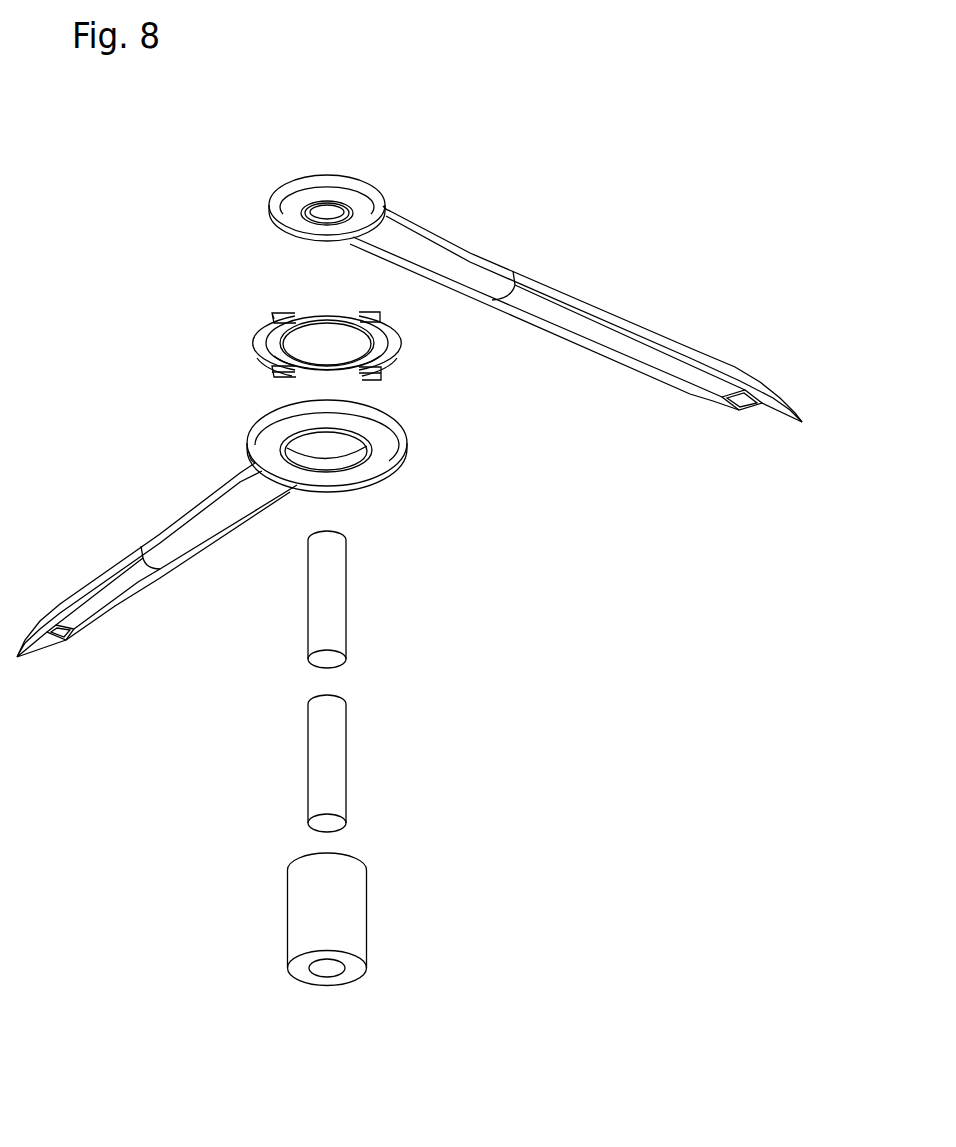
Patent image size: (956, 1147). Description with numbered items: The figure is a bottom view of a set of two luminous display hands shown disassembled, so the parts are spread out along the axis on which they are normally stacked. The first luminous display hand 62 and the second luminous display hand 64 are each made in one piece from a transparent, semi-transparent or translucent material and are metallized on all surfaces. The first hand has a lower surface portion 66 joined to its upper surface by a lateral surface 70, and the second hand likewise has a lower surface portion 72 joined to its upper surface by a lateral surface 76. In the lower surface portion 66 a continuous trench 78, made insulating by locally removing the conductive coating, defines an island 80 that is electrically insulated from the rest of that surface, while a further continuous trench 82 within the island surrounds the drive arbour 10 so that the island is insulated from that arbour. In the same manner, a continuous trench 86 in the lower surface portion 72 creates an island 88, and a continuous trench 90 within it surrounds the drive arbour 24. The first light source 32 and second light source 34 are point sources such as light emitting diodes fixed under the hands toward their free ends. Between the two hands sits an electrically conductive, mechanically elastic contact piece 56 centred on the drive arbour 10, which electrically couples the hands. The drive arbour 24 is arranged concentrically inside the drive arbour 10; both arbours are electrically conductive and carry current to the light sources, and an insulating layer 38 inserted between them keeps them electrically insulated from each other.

The drive arbour 10 is at (345, 893).
The drive arbour 24 is at (327, 600).
The insulating layer 38 is at (330, 758).
The contact piece 56 is at (389, 362).
The first luminous display hand 62 is at (224, 567).
The second luminous display hand 64 is at (512, 334).
The lower surface portion 66 is at (30, 649).
The lateral surface 70 is at (100, 580).
The lower surface portion 72 is at (778, 423).
The lateral surface 76 is at (630, 322).
The continuous trench 78 is at (115, 605).
The island 80 is at (139, 581).
The continuous trench 82 is at (370, 460).
The continuous trench 86 is at (567, 337).
The island 88 is at (636, 357).
The continuous trench 90 is at (301, 216).
The first light source 32 is at (66, 641).
The second light source 34 is at (739, 408).